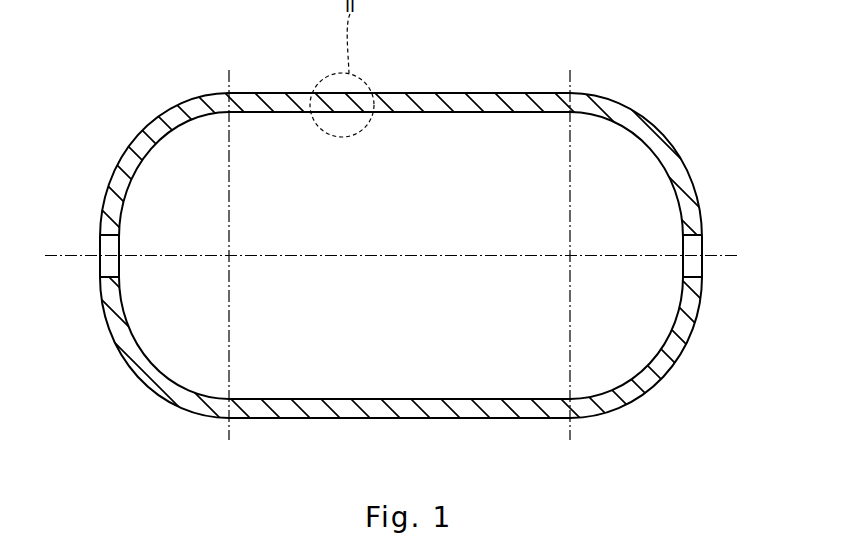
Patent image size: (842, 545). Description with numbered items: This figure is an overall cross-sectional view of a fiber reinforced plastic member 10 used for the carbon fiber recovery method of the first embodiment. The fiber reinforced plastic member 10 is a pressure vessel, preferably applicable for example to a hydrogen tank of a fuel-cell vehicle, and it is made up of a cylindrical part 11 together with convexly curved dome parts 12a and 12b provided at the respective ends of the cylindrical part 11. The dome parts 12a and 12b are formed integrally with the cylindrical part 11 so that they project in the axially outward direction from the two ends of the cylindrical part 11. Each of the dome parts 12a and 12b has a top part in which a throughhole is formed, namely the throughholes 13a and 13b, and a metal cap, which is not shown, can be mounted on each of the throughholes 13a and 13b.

The fiber reinforced plastic member 10 is at (638, 80).
The cylindrical part 11 is at (440, 92).
The dome part 12a is at (672, 148).
The dome part 12b is at (131, 146).
The throughhole 13a is at (702, 270).
The throughhole 13b is at (100, 270).